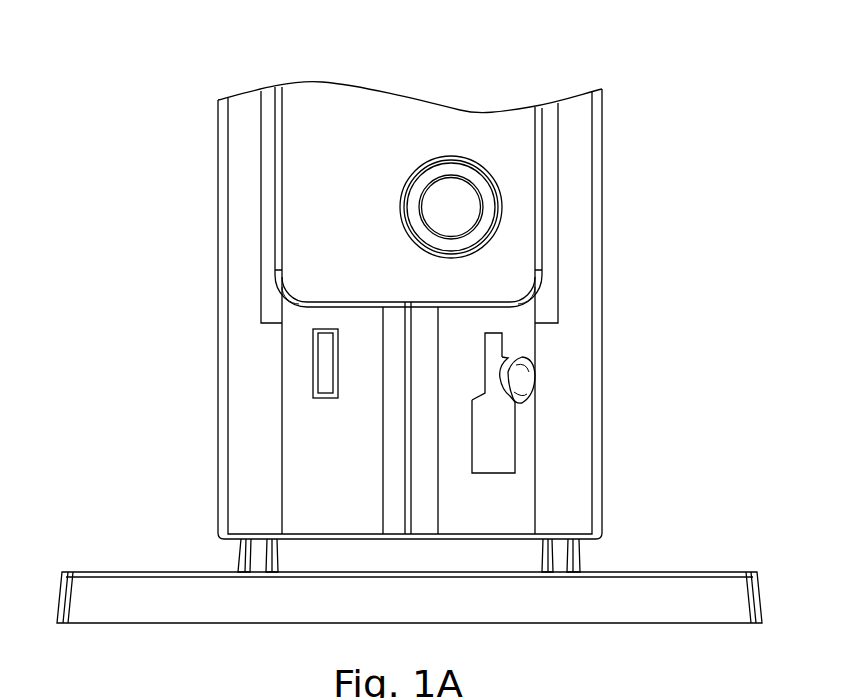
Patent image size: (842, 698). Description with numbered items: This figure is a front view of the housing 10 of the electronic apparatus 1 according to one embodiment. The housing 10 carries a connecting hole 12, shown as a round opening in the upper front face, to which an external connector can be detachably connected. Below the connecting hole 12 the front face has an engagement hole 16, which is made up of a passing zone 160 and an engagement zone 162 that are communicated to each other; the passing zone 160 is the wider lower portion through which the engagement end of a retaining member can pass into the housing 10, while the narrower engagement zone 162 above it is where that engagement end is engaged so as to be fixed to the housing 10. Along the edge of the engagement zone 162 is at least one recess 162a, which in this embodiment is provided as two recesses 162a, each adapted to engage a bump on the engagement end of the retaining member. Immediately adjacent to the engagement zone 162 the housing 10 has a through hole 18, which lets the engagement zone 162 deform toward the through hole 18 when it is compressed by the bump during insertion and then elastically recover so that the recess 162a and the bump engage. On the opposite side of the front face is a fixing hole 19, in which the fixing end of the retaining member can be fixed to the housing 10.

The electronic apparatus 1 is at (641, 86).
The housing 10 is at (602, 240).
The connecting hole 12 is at (503, 208).
The engagement hole 16 is at (712, 287).
The through hole 18 is at (534, 404).
The fixing hole 19 is at (313, 363).
The passing zone 160 is at (515, 442).
The engagement zone 162 is at (503, 340).
The recess 162a is at (505, 358).